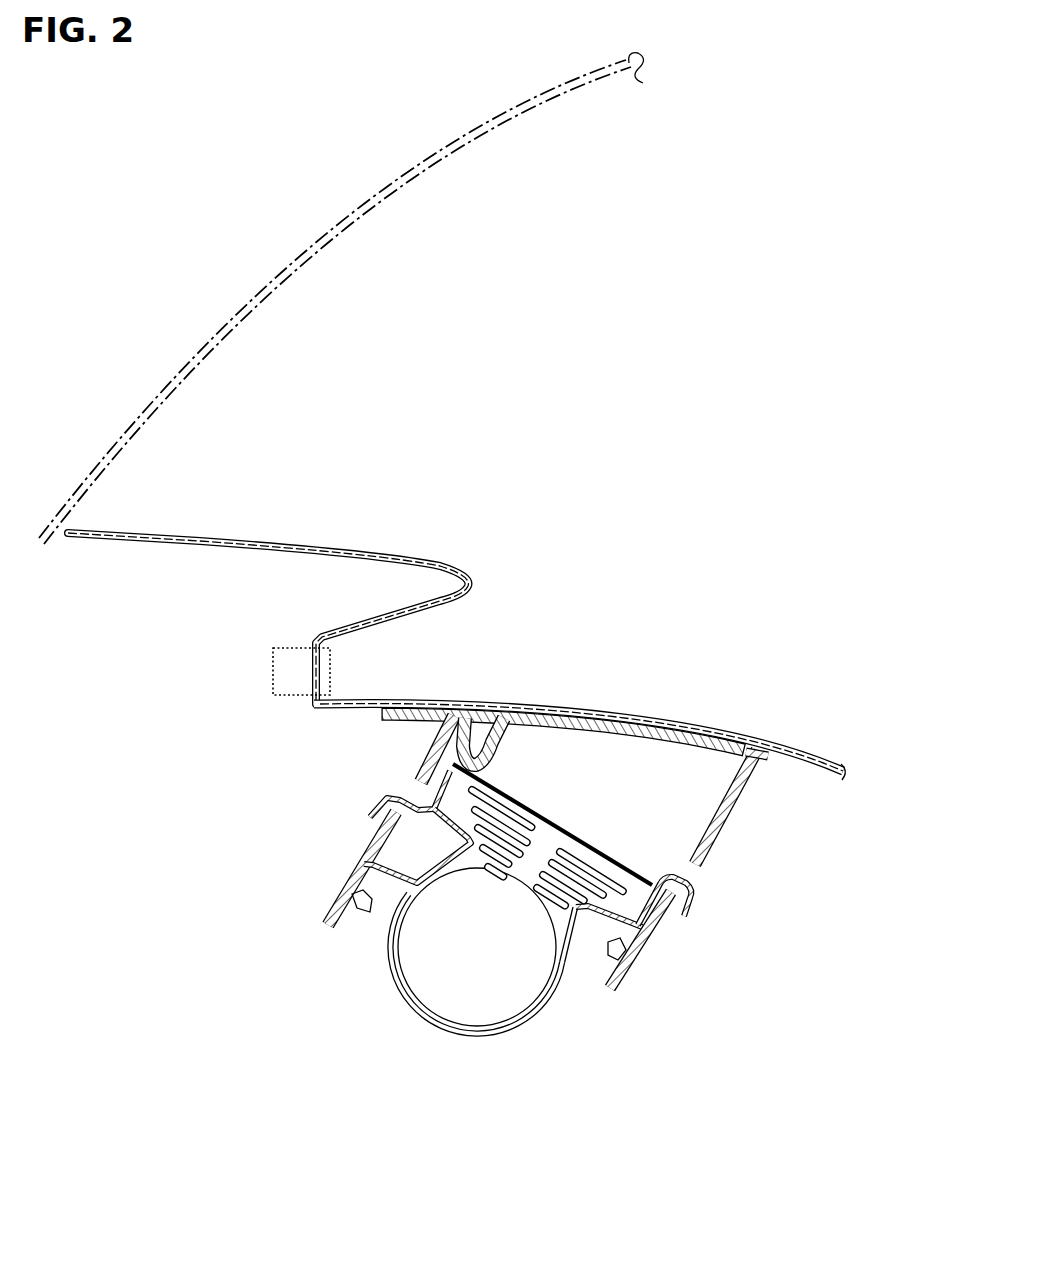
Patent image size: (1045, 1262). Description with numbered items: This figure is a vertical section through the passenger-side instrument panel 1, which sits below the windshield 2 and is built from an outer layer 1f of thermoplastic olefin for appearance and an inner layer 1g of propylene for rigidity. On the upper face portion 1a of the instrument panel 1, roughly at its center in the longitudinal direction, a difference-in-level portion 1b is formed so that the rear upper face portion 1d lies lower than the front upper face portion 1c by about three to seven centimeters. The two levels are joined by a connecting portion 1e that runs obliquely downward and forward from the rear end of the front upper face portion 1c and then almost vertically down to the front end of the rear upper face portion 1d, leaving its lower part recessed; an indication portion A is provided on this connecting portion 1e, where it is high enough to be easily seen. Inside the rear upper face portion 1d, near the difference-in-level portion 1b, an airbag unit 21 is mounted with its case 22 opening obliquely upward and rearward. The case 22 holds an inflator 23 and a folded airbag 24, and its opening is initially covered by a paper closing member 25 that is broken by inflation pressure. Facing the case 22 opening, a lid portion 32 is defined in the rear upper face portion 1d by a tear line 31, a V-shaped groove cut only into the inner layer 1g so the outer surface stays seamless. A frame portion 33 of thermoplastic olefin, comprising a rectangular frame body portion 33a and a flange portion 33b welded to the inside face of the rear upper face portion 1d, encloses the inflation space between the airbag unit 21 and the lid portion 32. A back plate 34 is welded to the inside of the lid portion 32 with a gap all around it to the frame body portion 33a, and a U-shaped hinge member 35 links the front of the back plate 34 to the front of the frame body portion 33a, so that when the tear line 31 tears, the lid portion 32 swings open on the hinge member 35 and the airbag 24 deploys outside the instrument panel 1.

The instrument panel 1 is at (281, 527).
The upper face portion 1a is at (518, 481).
The difference-in-level portion 1b is at (463, 616).
The front upper face portion 1c is at (423, 548).
The rear upper face portion 1d is at (600, 700).
The connecting portion 1e is at (328, 668).
The outer layer 1f is at (177, 536).
The inner layer 1g is at (207, 545).
The windshield 2 is at (291, 259).
The airbag unit 21 is at (502, 937).
The case 22 is at (540, 1008).
The inflator 23 is at (487, 1028).
The airbag 24 is at (447, 810).
The closing member 25 is at (566, 838).
The tear line 31 is at (497, 718).
The lid portion 32 is at (642, 696).
The frame portion 33 is at (784, 807).
The frame body portion 33a is at (729, 822).
The flange portion 33b is at (783, 792).
The back plate 34 is at (657, 745).
The hinge member 35 is at (508, 753).
The indication portion A is at (270, 664).